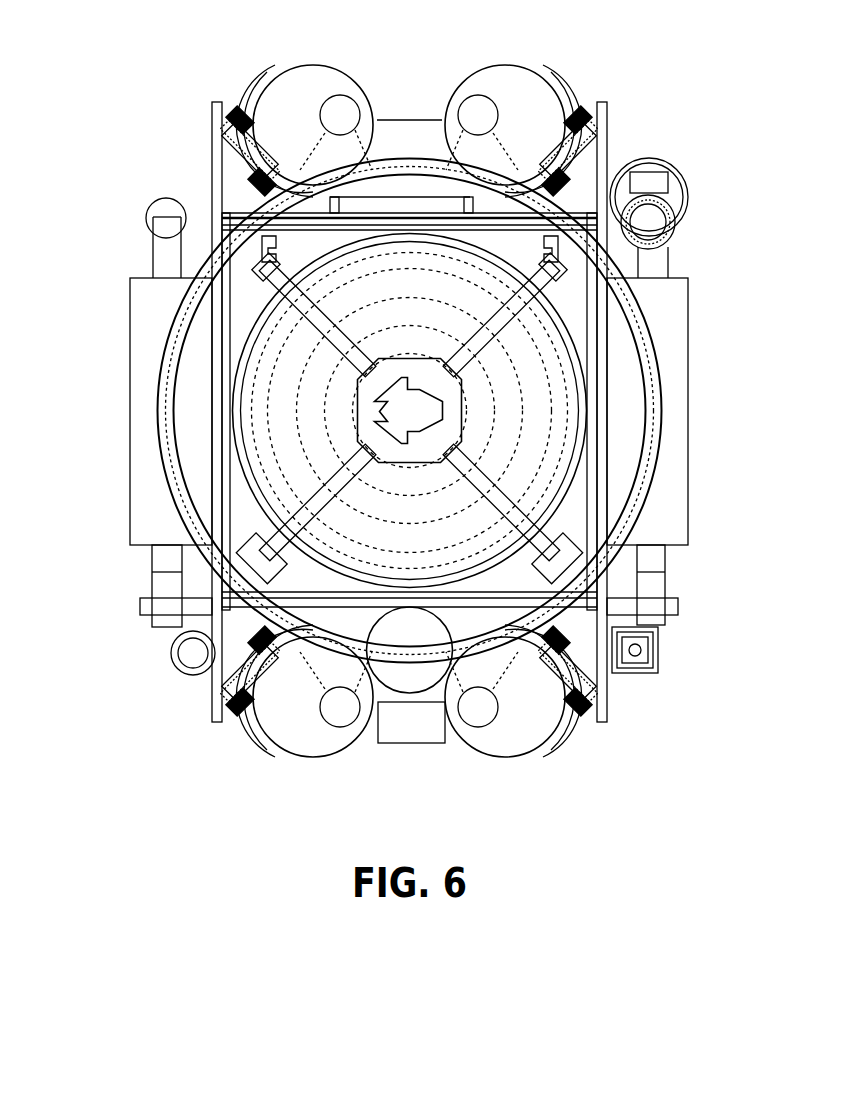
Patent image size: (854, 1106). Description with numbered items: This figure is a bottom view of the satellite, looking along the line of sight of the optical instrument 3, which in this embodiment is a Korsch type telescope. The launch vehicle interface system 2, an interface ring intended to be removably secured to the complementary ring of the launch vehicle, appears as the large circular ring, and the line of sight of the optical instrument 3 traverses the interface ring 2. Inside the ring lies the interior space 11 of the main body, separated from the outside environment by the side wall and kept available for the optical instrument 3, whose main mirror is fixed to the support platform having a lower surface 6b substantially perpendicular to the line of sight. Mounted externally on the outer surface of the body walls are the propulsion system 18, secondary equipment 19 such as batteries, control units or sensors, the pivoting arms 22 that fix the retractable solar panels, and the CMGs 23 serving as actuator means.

The launch vehicle interface system 2 is at (652, 407).
The optical instrument 3 is at (240, 350).
The lower surface 6b is at (245, 488).
The interior space 11 is at (573, 490).
The propulsion system 18 is at (417, 682).
The secondary equipment 19 is at (123, 480).
The pivoting arms 22 is at (152, 247).
The CMGs 23 is at (302, 90).